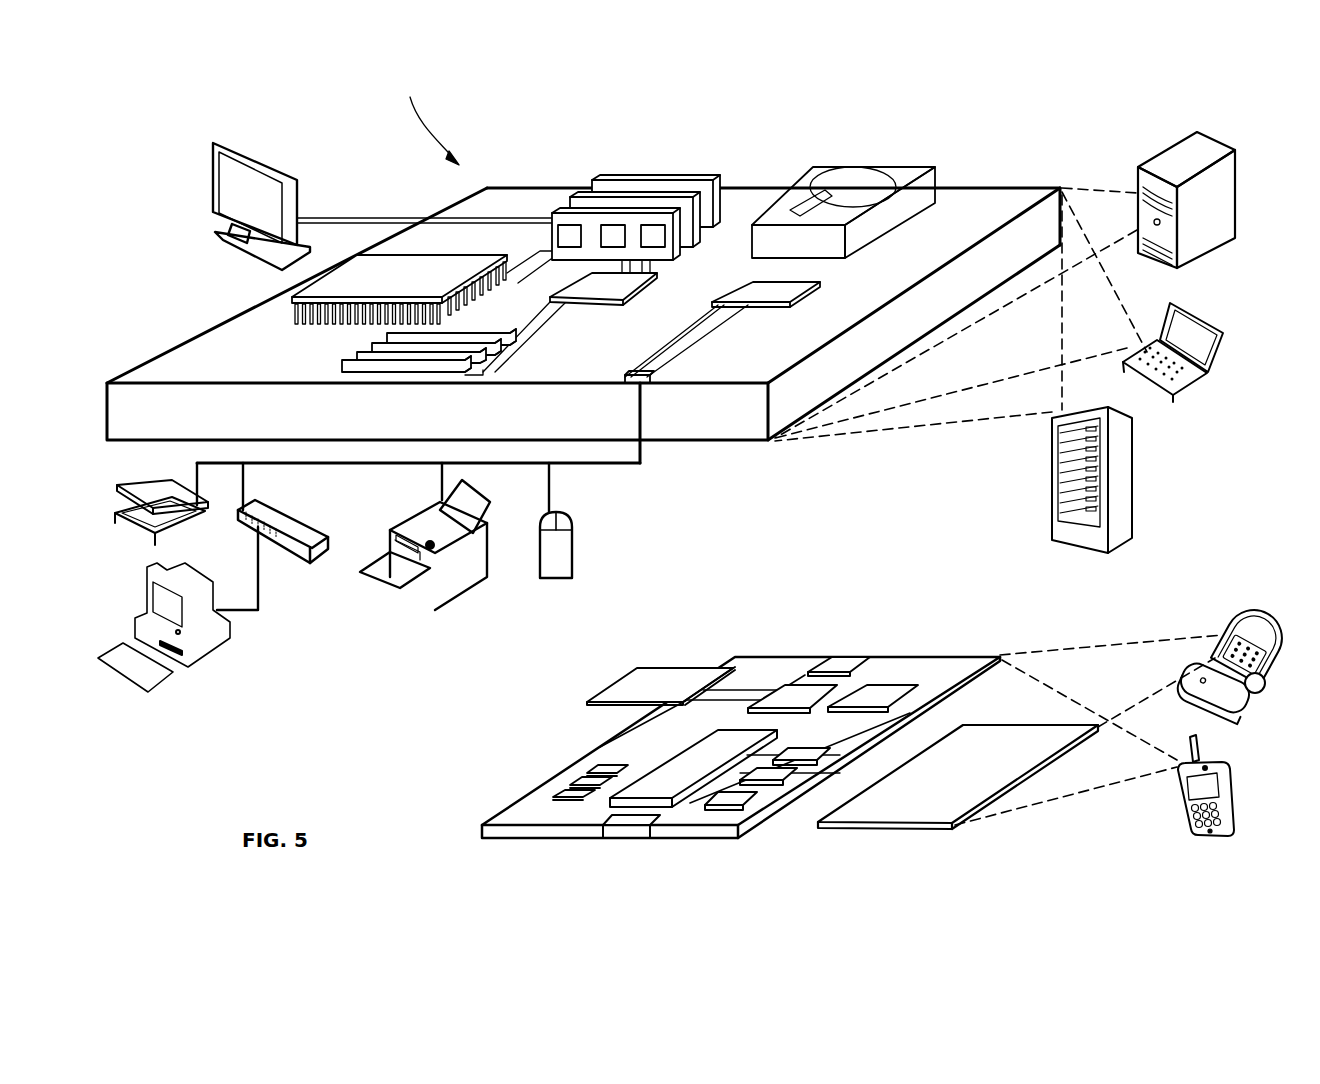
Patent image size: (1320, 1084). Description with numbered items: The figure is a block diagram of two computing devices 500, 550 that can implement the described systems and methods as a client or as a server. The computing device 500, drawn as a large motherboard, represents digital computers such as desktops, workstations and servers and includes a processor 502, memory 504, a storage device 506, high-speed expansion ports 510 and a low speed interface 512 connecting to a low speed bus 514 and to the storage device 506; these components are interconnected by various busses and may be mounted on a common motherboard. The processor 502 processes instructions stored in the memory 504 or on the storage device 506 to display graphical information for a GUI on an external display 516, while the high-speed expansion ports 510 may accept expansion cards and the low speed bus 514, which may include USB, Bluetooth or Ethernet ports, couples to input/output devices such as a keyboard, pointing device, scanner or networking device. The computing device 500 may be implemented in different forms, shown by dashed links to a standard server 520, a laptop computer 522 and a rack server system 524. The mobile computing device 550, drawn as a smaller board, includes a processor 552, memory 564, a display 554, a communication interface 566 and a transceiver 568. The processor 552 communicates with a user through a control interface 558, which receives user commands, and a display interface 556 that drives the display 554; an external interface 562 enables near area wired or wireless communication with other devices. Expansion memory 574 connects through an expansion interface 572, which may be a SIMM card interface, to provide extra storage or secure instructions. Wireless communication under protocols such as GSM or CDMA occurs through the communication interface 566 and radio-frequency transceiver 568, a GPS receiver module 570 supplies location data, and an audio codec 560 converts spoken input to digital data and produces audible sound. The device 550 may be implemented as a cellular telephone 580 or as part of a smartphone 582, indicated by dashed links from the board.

The computing device 500 is at (1253, 116).
The processor 502 is at (288, 310).
The memory 504 is at (623, 180).
The storage device 506 is at (592, 182).
The high-speed expansion ports 510 is at (367, 348).
The low speed interface 512 is at (753, 292).
The low speed bus 514 is at (645, 383).
The display 516 is at (231, 140).
The standard server 520 is at (1150, 163).
The laptop computer 522 is at (1184, 393).
The rack server system 524 is at (1050, 512).
The computing device 550 is at (553, 714).
The processor 552 is at (672, 785).
The display 554 is at (928, 802).
The display interface 556 is at (727, 798).
The control interface 558 is at (772, 782).
The audio codec 560 is at (810, 755).
The external interface 562 is at (625, 823).
The memory 564 is at (583, 775).
The communication interface 566 is at (783, 690).
The transceiver 568 is at (880, 693).
The GPS receiver module 570 is at (848, 660).
The expansion interface 572 is at (717, 665).
The expansion memory 574 is at (626, 673).
The flip mobile phone 580 is at (1238, 610).
The smartphone 582 is at (1178, 795).